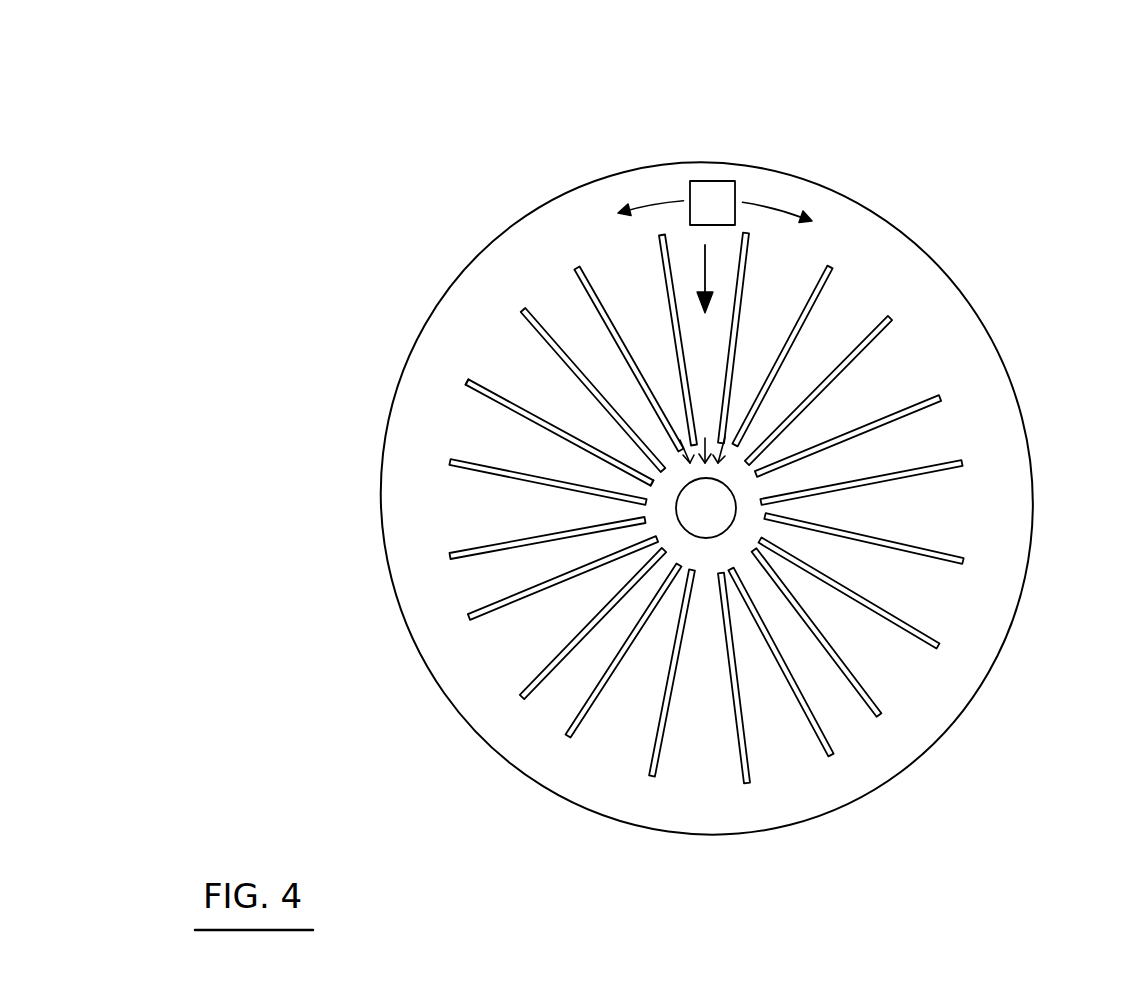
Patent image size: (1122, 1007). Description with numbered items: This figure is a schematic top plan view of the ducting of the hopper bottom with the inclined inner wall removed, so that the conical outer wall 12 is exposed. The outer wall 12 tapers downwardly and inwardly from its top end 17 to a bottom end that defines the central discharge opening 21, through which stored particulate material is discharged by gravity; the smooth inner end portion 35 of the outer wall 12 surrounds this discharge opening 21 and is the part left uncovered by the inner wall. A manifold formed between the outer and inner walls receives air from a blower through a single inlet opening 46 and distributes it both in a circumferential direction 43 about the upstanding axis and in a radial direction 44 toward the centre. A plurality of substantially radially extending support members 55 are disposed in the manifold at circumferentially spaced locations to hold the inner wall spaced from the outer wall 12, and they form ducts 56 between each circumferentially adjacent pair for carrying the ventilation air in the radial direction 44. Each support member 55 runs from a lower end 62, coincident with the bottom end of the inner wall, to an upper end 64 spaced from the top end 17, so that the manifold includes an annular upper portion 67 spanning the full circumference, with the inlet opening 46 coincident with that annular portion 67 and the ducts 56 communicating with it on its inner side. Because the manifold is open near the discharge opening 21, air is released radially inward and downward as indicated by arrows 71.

The outer wall 12 is at (706, 463).
The top end 17 is at (443, 292).
The discharge opening 21 is at (715, 520).
The inner end portion 35 is at (745, 499).
The circumferential direction 43 is at (660, 193).
The radial direction 44 is at (707, 262).
The inlet opening 46 is at (707, 192).
The support members 55 is at (918, 424).
The ducts 56 is at (901, 375).
The lower ends 62 is at (640, 471).
The upper ends 64 is at (465, 385).
The annular upper portion 67 is at (846, 227).
The arrows 71 is at (676, 472).